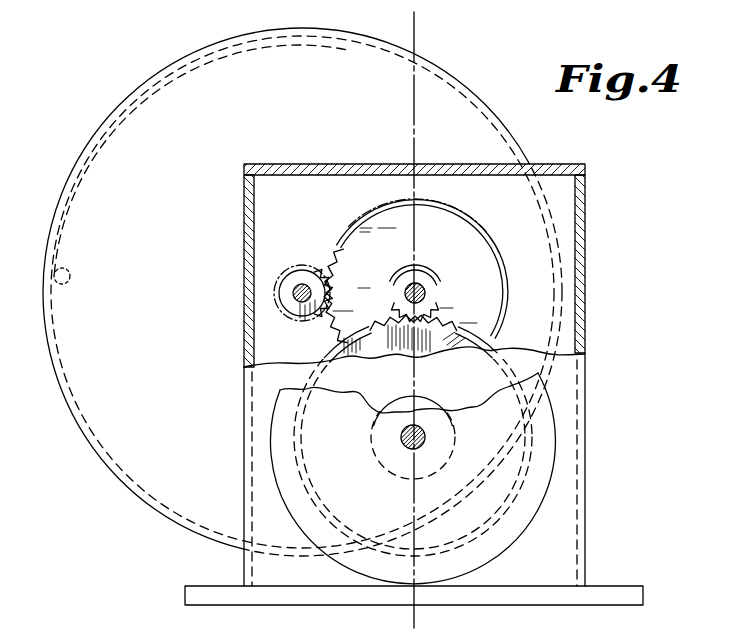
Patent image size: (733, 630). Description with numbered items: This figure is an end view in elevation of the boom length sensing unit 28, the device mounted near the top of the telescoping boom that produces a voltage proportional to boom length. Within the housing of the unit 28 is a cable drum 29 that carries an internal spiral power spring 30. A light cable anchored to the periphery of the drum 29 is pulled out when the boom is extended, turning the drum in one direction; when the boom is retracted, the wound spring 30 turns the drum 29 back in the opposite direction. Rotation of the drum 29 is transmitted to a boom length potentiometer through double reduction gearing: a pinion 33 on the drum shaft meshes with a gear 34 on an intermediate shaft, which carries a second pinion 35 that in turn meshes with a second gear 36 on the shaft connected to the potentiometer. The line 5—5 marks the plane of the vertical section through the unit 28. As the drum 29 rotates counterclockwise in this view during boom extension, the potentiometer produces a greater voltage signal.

The section line 5— 5 is at (415, 37).
The boom length sensing unit 28 is at (597, 293).
The cable drum 29 is at (219, 40).
The internal spiral power spring 30 is at (346, 49).
The pinion 33 is at (300, 273).
The gear 34 is at (350, 255).
The second pinion 35 is at (425, 287).
The second gear 36 is at (462, 328).